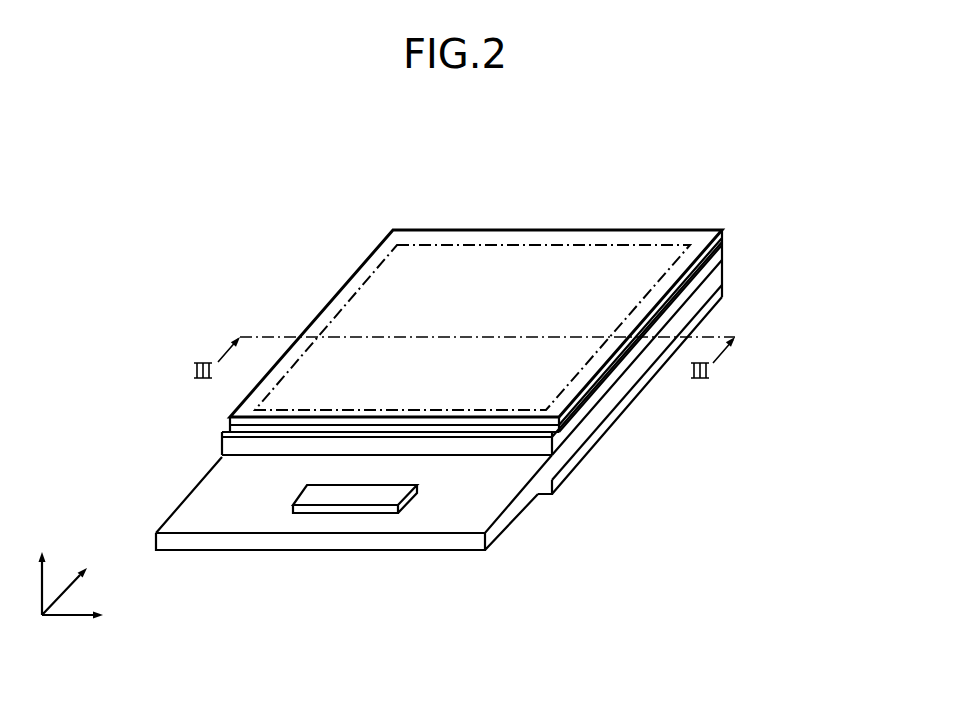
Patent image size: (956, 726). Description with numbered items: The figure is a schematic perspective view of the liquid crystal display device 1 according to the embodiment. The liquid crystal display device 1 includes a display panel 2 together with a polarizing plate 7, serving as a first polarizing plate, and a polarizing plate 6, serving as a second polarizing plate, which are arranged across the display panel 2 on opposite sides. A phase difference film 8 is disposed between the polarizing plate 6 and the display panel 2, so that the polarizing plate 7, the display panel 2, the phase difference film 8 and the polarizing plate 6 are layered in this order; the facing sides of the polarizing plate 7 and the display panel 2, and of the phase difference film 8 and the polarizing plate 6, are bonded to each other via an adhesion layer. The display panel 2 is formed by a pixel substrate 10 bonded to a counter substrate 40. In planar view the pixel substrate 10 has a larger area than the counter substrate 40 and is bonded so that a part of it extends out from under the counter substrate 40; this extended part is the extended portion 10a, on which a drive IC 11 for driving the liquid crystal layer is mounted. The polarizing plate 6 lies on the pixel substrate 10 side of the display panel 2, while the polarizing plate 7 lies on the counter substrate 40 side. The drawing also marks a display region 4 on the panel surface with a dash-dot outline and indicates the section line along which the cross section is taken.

The liquid crystal display device 1 is at (663, 183).
The display panel 2 is at (808, 223).
The display region 4 is at (509, 244).
The polarizing plate 6 is at (722, 298).
The polarizing plate 7 is at (722, 229).
The phase difference film 8 is at (722, 283).
The pixel substrate 10 is at (722, 267).
The extended portion 10a is at (484, 503).
The drive IC 11 is at (352, 493).
The counter substrate 40 is at (722, 248).